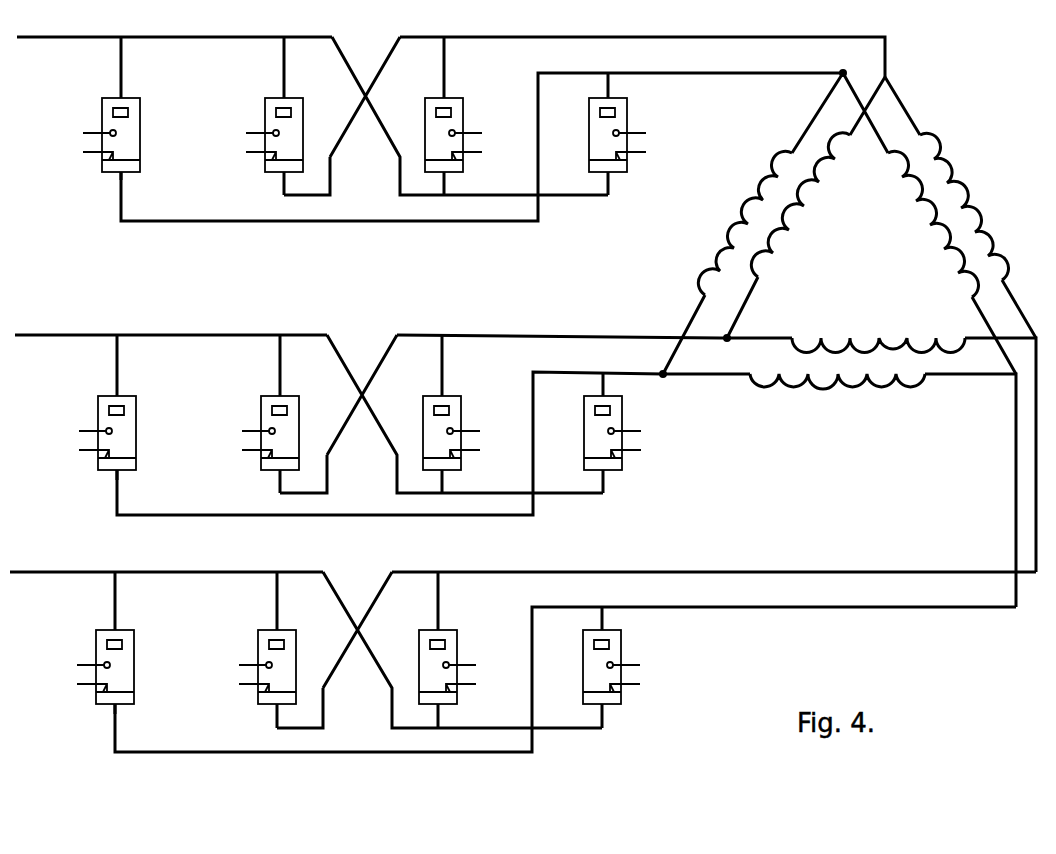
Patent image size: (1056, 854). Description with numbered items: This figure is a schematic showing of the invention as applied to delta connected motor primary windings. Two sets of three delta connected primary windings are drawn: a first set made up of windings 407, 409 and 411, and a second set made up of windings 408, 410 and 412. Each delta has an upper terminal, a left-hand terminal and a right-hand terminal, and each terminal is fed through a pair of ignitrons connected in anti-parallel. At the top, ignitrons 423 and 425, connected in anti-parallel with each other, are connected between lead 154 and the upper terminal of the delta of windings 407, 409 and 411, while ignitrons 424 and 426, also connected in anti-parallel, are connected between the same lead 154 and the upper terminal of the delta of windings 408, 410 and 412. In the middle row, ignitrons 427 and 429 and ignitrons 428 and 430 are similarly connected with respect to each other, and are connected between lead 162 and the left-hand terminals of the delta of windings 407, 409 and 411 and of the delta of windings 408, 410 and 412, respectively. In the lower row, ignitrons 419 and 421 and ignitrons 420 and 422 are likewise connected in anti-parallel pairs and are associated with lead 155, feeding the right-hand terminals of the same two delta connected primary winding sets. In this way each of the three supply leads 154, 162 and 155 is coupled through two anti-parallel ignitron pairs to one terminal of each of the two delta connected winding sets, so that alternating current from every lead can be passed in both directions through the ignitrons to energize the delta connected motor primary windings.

The lead 154 is at (43, 38).
The lead 162 is at (53, 334).
The lead 155 is at (48, 571).
The delta connected primary winding 407 is at (823, 180).
The delta connected primary winding 408 is at (768, 178).
The delta connected primary winding 409 is at (851, 337).
The delta connected primary winding 410 is at (856, 389).
The delta connected primary winding 411 is at (995, 232).
The delta connected primary winding 412 is at (943, 248).
The ignitron 419 is at (295, 631).
The ignitron 420 is at (136, 631).
The ignitron 421 is at (458, 631).
The ignitron 422 is at (619, 631).
The ignitron 423 is at (305, 103).
The ignitron 424 is at (142, 103).
The ignitron 425 is at (465, 103).
The ignitron 426 is at (626, 103).
The ignitron 427 is at (298, 398).
The ignitron 428 is at (139, 398).
The ignitron 429 is at (462, 398).
The ignitron 430 is at (626, 398).